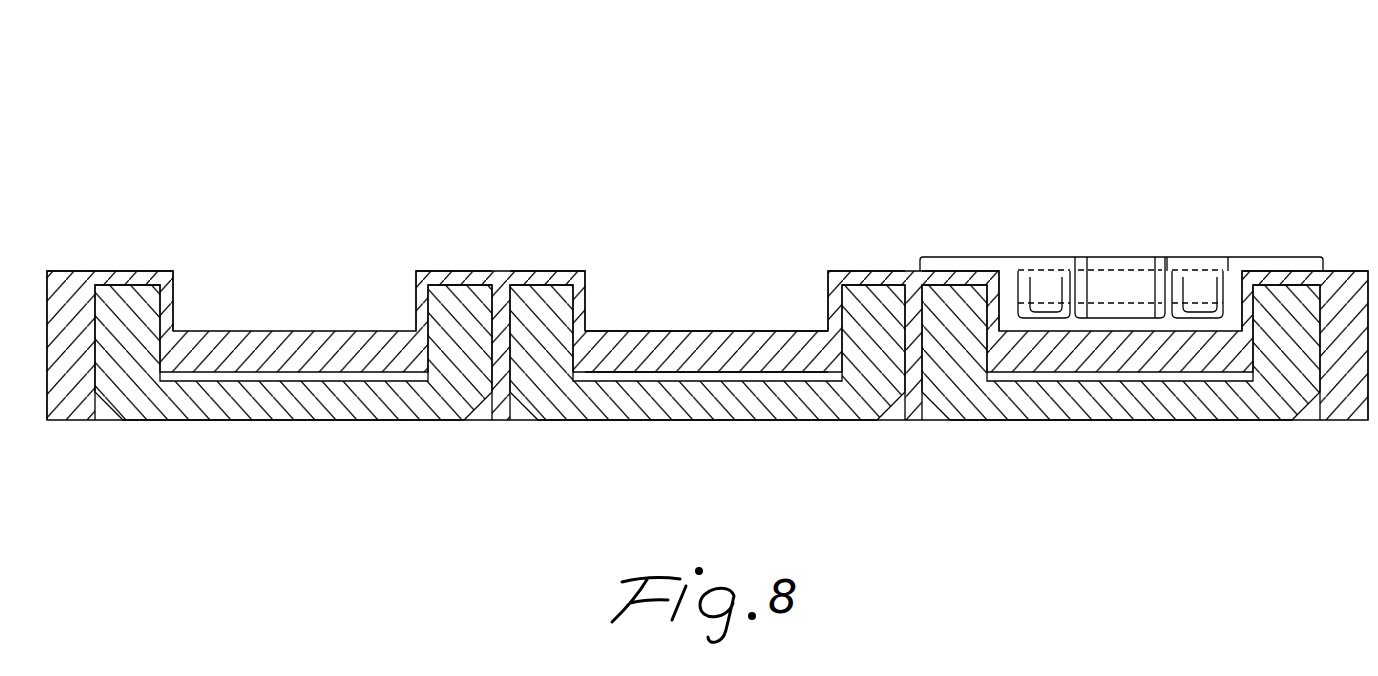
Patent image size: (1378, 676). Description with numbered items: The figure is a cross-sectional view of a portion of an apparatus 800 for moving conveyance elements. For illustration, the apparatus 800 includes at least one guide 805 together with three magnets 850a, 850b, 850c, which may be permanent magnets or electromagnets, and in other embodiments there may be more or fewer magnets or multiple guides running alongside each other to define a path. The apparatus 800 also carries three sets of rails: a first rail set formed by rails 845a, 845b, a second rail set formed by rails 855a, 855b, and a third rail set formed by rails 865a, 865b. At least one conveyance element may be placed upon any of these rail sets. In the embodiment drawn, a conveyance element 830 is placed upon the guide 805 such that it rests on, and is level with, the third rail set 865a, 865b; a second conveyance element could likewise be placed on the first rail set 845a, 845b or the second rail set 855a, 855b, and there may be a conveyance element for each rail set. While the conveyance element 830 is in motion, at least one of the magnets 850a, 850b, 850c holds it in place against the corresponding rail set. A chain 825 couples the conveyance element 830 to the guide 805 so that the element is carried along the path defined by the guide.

The apparatus 800 is at (283, 160).
The guide 805 is at (702, 335).
The chain 825 is at (1122, 282).
The conveyance element 830 is at (1250, 263).
The first rail set rail 845a is at (70, 269).
The first rail set rail 845b is at (447, 266).
The second rail set rail 855a is at (548, 266).
The second rail set rail 855b is at (862, 268).
The third rail set rail 865a is at (950, 268).
The third rail set rail 865b is at (1343, 268).
The magnet 850a is at (294, 405).
The magnet 850b is at (702, 406).
The magnet 850c is at (1123, 406).